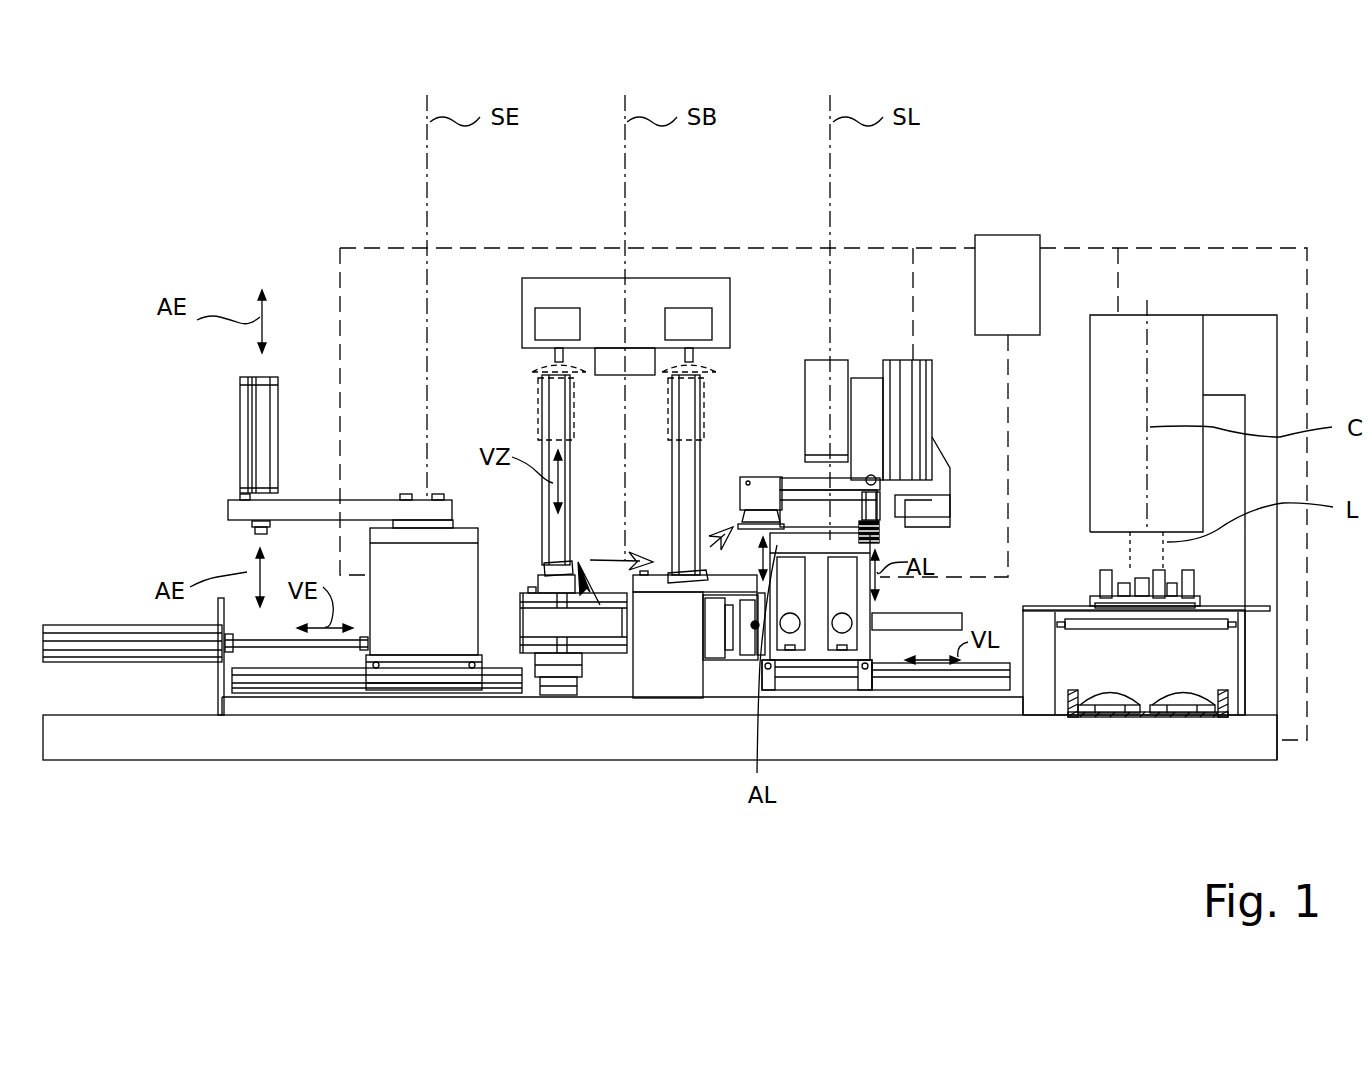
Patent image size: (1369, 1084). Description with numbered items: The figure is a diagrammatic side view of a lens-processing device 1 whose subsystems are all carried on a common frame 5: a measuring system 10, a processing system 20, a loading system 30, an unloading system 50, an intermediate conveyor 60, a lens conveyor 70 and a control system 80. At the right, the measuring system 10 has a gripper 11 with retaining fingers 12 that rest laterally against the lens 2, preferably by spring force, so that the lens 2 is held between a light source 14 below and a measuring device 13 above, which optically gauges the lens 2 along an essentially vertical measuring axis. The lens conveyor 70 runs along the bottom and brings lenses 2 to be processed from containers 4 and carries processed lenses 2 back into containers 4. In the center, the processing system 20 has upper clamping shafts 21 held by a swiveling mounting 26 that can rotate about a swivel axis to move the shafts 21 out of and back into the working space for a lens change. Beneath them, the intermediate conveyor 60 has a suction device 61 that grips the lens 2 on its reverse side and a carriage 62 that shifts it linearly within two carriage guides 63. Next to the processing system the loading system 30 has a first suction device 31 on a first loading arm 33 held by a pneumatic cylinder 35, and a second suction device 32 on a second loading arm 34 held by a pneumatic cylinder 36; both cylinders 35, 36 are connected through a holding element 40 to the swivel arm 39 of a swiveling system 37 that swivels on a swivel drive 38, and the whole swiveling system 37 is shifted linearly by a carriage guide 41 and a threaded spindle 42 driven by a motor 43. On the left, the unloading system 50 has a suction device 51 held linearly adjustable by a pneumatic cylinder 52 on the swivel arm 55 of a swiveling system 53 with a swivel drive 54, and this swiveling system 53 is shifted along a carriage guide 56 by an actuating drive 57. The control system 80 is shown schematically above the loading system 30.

The device 1 is at (154, 143).
The lens 2 is at (1173, 577).
The container 4 is at (1230, 697).
The frame 5 is at (420, 705).
The measuring system 10 is at (1168, 287).
The gripper 11 is at (1227, 565).
The retaining fingers 12 is at (1188, 587).
The measuring device 13 is at (1185, 365).
The light source 14 is at (1212, 623).
The processing system 20 is at (636, 255).
The upper clamping shaft 21 is at (555, 347).
The mounting 26 is at (602, 298).
The loading system 30 is at (857, 360).
The first suction device 31 is at (887, 532).
The second suction device 32 is at (710, 547).
The first loading arm 33 is at (887, 505).
The second loading arm 34 is at (813, 483).
The pneumatic cylinder 35 is at (920, 403).
The pneumatic cylinder 36 is at (815, 383).
The swiveling system 37 is at (811, 688).
The swivel drive 38 is at (810, 545).
The swivel arm 39 is at (817, 505).
The holding element 40 is at (878, 393).
The carriage guide 41 is at (740, 668).
The threaded spindle 42 is at (893, 627).
The motor 43 is at (622, 623).
The unloading system 50 is at (368, 478).
The suction device 51 is at (245, 528).
The pneumatic cylinder 52 is at (247, 410).
The swiveling system 53 is at (432, 472).
The swivel drive 54 is at (465, 530).
The swivel arm 55 is at (312, 513).
The carriage guide 56 is at (315, 685).
The actuating drive 57 is at (85, 627).
The intermediate conveyor 60 is at (580, 565).
The suction device 61 is at (710, 567).
The carriage 62 is at (562, 583).
The carriage guides 63 is at (547, 453).
The lens conveyor 70 is at (960, 760).
The control system 80 is at (1008, 253).